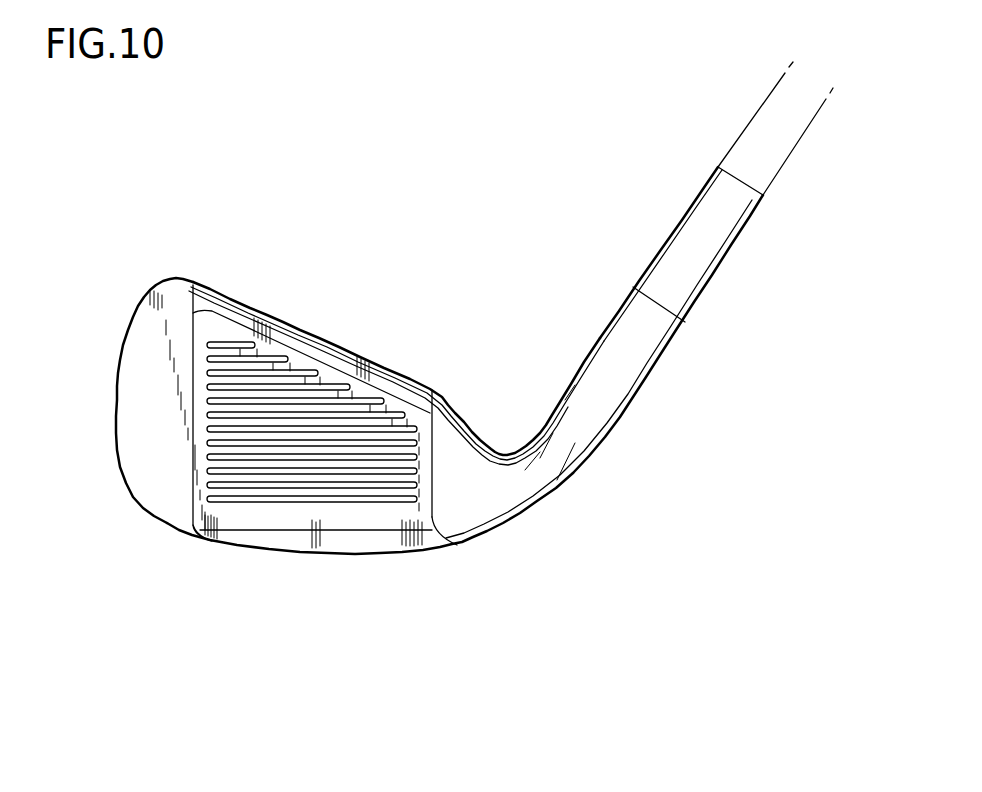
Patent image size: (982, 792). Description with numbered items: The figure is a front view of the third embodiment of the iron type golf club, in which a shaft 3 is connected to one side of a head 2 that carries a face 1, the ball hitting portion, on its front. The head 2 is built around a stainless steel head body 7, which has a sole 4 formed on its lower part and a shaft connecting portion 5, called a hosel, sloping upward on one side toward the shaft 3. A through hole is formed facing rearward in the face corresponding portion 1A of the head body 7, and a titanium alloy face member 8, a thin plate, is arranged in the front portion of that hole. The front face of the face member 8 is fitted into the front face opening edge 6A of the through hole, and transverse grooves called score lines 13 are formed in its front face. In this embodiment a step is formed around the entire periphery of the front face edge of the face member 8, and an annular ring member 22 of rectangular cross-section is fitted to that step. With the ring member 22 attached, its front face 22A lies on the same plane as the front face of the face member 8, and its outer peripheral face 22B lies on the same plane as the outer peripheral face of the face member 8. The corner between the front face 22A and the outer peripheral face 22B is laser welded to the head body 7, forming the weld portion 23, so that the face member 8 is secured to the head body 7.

The face 1 is at (337, 428).
The face corresponding portion 1A is at (337, 428).
The head 2 is at (468, 683).
The shaft 3 is at (748, 127).
The sole 4 is at (306, 552).
The shaft connecting portion 5 is at (600, 335).
The front opening edge 6A is at (325, 357).
The head body 7 is at (130, 317).
The face member 8 is at (240, 382).
The score lines 13 is at (273, 505).
The ring member 22 is at (331, 588).
The front face 22A is at (380, 527).
The outer peripheral face 22B is at (287, 540).
The weld portion 23 is at (420, 550).